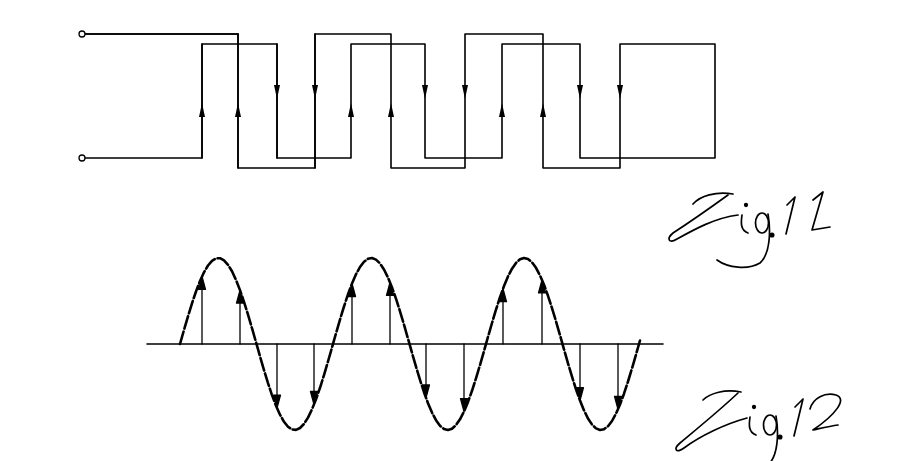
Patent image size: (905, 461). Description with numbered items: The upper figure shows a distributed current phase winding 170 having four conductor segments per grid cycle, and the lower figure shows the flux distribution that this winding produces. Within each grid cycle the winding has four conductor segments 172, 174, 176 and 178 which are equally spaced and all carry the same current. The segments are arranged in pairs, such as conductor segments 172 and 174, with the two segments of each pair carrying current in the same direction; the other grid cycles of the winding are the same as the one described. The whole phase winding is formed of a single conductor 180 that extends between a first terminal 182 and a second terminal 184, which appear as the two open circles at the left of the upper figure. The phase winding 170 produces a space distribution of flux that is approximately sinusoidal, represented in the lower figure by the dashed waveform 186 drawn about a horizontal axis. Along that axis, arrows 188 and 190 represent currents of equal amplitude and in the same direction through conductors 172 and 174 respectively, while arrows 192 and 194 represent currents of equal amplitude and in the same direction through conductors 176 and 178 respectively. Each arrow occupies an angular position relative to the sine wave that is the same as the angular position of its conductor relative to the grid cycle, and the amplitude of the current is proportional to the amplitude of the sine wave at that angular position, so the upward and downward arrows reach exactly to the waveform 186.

In FIG. 11, the distributed current phase winding 170 is at (224, 33).
In FIG. 11, the conductor segment 172 is at (202, 75).
In FIG. 11, the conductor segment 174 is at (238, 148).
In FIG. 11, the conductor segment 176 is at (278, 67).
In FIG. 11, the conductor segment 178 is at (316, 53).
In FIG. 11, the single conductor 180 is at (138, 35).
In FIG. 11, the terminal 182 is at (81, 37).
In FIG. 11, the terminal 184 is at (82, 155).
In FIG. 12, the waveform 186 is at (192, 302).
In FIG. 12, the arrow 188 is at (204, 337).
In FIG. 12, the arrow 190 is at (238, 336).
In FIG. 12, the arrow 192 is at (277, 349).
In FIG. 12, the arrow 194 is at (317, 350).